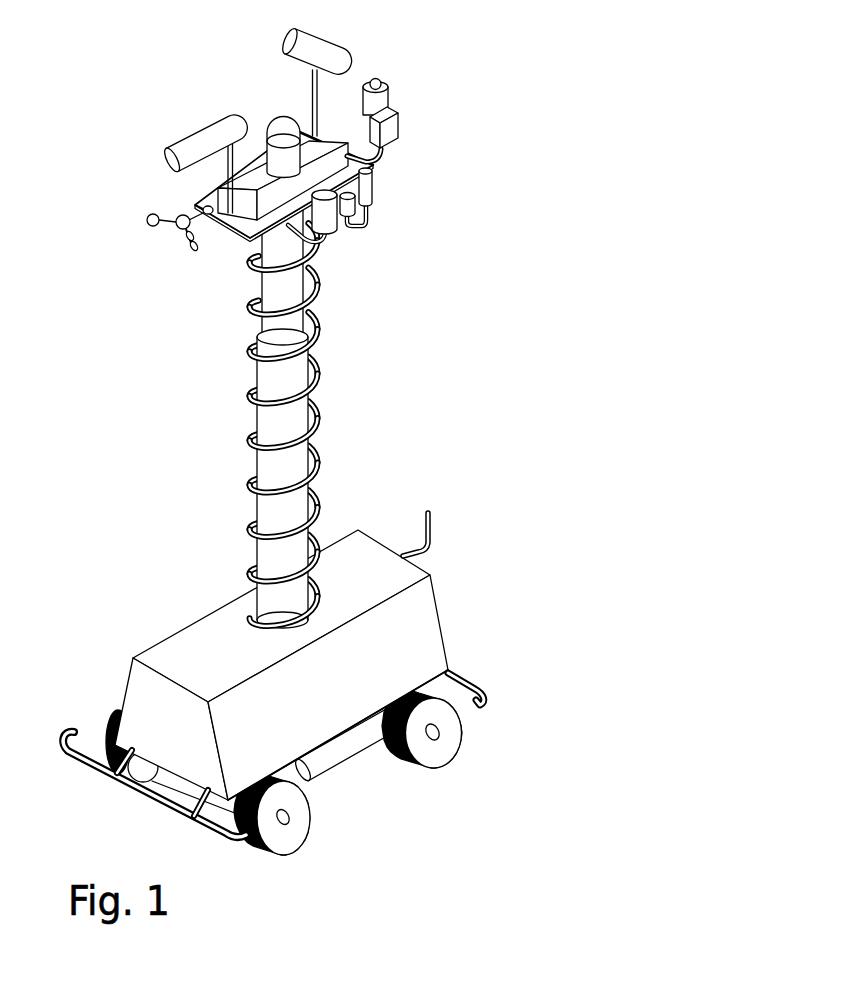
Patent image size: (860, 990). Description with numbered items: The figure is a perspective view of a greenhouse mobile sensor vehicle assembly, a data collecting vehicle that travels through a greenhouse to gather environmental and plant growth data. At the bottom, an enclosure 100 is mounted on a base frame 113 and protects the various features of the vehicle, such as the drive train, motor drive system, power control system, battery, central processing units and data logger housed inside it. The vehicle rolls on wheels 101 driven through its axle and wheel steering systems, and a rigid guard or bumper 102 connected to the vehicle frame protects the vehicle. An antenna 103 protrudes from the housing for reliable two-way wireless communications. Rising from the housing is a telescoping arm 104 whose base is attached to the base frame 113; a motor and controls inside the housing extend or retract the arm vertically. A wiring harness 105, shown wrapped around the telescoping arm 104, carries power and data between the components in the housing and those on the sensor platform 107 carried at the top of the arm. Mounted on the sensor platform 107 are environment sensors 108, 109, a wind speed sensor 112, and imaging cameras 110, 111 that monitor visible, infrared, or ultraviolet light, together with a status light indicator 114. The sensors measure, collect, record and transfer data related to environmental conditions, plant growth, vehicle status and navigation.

The enclosure 100 is at (353, 708).
The wheels 101 is at (443, 747).
The rigid guard or bumper 102 is at (467, 673).
The antenna 103 is at (433, 512).
The telescoping arm 104 is at (297, 422).
The wiring harness 105 is at (345, 414).
The sensor platform 107 is at (237, 237).
The environment sensors 108 is at (337, 245).
The environment sensors 109 is at (397, 65).
The imaging cameras 110 is at (320, 38).
The imaging cameras 111 is at (198, 132).
The wind speed sensor 112 is at (167, 245).
The base frame 113 is at (330, 787).
The status light indicator 114 is at (277, 117).